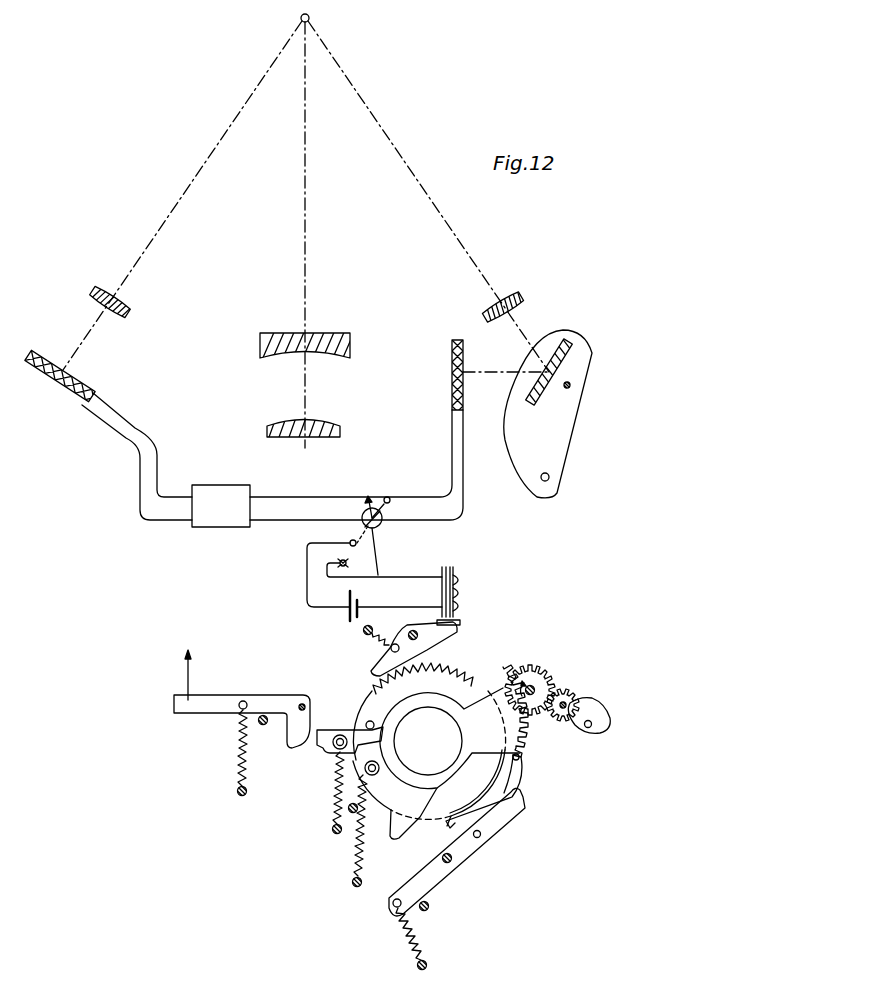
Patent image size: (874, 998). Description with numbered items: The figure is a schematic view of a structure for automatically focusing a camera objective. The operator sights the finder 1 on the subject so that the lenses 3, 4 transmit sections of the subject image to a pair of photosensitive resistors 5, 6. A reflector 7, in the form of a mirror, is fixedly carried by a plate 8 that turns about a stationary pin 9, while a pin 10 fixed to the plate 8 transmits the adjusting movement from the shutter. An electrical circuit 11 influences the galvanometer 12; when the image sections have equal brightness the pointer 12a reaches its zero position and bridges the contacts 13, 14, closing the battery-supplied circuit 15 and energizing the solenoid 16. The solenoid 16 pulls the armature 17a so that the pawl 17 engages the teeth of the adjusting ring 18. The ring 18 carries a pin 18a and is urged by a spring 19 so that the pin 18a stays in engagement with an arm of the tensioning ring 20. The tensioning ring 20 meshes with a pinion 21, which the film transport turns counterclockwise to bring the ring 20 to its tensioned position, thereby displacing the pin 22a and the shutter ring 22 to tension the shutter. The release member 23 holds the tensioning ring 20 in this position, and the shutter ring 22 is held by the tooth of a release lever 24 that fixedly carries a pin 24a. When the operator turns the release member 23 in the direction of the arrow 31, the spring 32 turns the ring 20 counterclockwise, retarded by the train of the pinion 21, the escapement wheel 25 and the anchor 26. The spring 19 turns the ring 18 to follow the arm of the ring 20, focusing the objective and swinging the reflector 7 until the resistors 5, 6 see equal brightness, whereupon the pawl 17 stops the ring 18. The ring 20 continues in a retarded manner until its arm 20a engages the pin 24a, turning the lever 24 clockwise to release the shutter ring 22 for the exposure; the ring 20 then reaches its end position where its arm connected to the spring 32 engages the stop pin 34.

The finder 1 is at (318, 420).
The lens 3 is at (498, 321).
The lens 4 is at (113, 317).
The photosensitive resistor 5 is at (452, 380).
The photosensitive resistor 6 is at (67, 389).
The reflector 7 is at (573, 350).
The plate 8 is at (580, 346).
The stationary pin 9 is at (571, 386).
The pin 10 is at (550, 478).
The electrical circuit 11 is at (215, 527).
The galvanometer 12 is at (381, 523).
The pointer 12a is at (380, 560).
The contact 13 is at (351, 542).
The contact 14 is at (384, 566).
The circuit 15 is at (307, 612).
The solenoid 16 is at (457, 576).
The pawl 17 is at (377, 658).
The armature 17a is at (460, 622).
The adjusting ring 18 is at (363, 708).
The pin 18a is at (366, 723).
The spring 19 is at (357, 868).
The tensioning ring 20 is at (378, 690).
The arm 20a is at (393, 835).
The pinion 21 is at (543, 672).
The shutter ring 22 is at (515, 785).
The pin 22a is at (520, 759).
The release member 23 is at (203, 713).
The release lever 24 is at (509, 813).
The pin 24a is at (478, 838).
The escapement wheel 25 is at (572, 697).
The anchor 26 is at (596, 715).
The arrow 31 is at (186, 682).
The spring 32 is at (334, 792).
The stop pin 34 is at (349, 813).